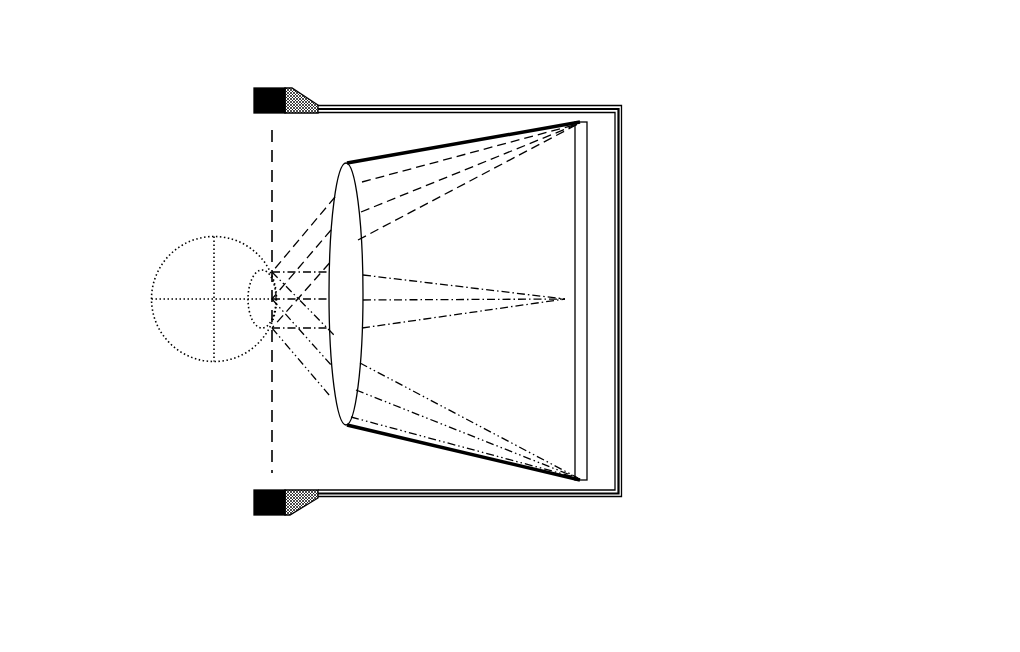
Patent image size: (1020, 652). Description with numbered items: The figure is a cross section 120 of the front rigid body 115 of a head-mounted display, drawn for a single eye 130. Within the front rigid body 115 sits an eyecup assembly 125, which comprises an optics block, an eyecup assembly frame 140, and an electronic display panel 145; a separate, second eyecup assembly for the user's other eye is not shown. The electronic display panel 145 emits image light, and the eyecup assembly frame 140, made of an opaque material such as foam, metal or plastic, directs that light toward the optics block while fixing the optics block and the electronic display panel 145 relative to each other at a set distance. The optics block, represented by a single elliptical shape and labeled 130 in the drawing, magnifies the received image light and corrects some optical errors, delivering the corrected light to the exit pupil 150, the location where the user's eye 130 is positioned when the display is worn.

The cross section 120 is at (79, 18).
The front rigid body 115 is at (591, 107).
The electronic display panel 145 is at (585, 227).
The eyecup assembly frame 140 is at (322, 443).
The eye 130 is at (183, 248).
The exit pupil 150 is at (263, 422).
The eyecup assembly 125 is at (603, 443).